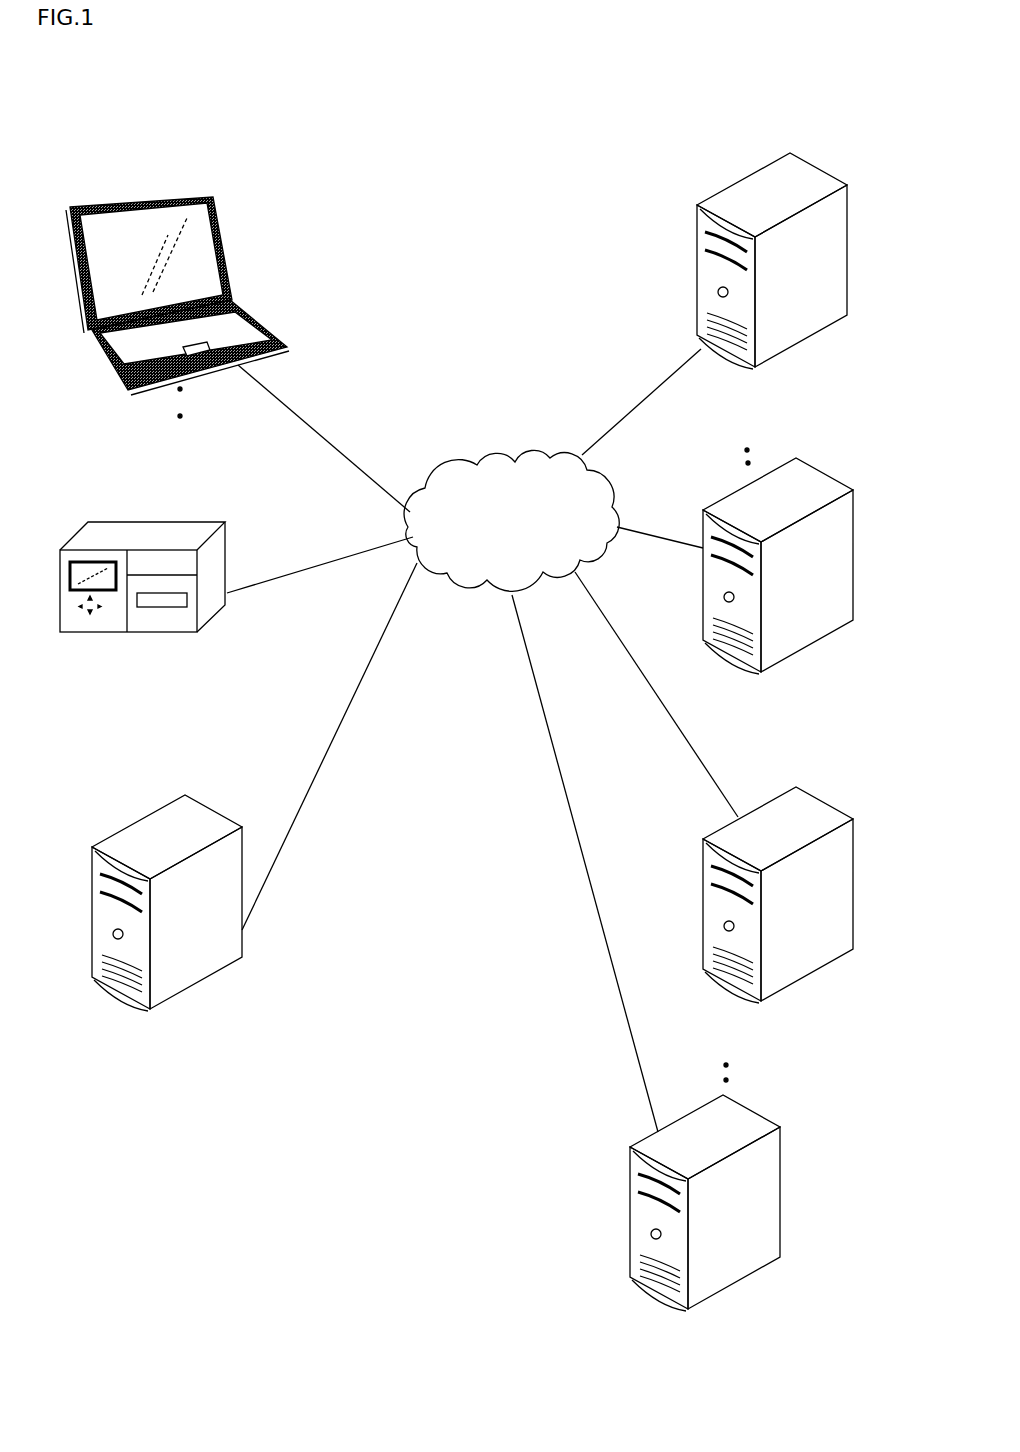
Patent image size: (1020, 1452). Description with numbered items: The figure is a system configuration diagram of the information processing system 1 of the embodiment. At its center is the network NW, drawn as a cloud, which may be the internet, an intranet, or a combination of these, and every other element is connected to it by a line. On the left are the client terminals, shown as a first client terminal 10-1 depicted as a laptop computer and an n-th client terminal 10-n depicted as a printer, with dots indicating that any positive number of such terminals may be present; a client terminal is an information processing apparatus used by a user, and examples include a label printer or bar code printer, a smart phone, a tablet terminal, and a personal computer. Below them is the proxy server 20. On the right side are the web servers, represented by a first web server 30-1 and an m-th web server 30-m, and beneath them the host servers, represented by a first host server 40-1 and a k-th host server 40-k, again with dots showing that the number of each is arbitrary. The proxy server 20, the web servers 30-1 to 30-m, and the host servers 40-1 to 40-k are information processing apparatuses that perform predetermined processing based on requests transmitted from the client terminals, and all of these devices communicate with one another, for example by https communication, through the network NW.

The information processing system 1 is at (400, 1205).
The client terminal 10-1 is at (160, 197).
The client terminal 10-n is at (118, 522).
The proxy server 20 is at (158, 808).
The web server 30-1 is at (805, 340).
The web server 30-m is at (811, 645).
The host server 40-1 is at (812, 975).
The host server 40-k is at (740, 1283).
The network NW is at (508, 460).